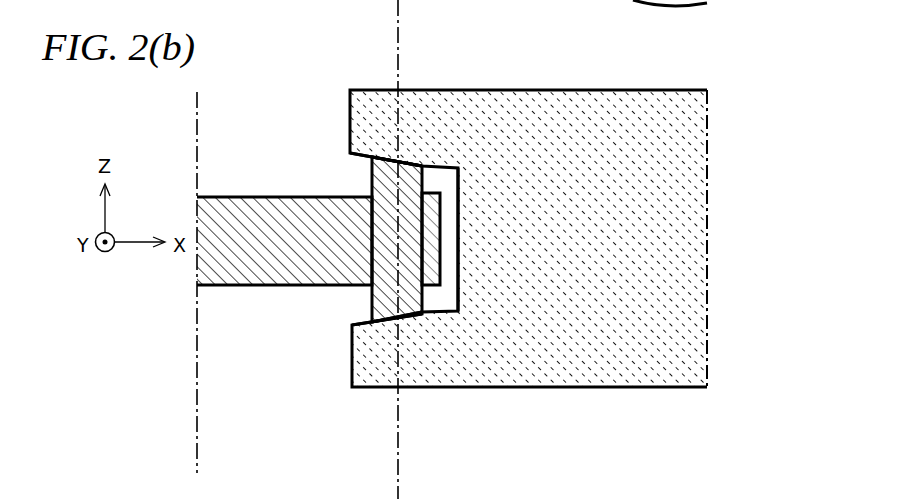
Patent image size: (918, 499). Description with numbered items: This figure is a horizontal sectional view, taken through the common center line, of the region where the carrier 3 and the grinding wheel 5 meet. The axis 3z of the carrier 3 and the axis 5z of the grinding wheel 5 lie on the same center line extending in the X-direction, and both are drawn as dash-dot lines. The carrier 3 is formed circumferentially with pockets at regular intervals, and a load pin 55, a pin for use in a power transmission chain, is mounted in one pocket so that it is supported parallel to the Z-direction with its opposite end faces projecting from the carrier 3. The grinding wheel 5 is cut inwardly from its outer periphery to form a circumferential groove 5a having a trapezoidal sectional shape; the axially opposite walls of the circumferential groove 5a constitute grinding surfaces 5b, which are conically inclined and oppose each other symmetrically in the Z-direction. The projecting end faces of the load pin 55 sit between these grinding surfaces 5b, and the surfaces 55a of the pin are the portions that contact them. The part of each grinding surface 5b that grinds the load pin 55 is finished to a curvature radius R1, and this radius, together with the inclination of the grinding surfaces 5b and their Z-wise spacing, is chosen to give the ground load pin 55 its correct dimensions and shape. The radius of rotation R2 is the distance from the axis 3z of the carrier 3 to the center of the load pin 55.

The carrier 3 is at (242, 197).
The axis of the carrier 3z is at (197, 348).
The grinding wheel 5 is at (531, 90).
The circumferential groove 5a is at (446, 289).
The grinding surface 5b is at (359, 153).
The axis of the grinding wheel 5z is at (707, 225).
The load pin 55 is at (372, 313).
The contact surface 55a is at (386, 210).
The curvature radius R1 is at (386, 204).
The radius of rotation R2 is at (396, 447).